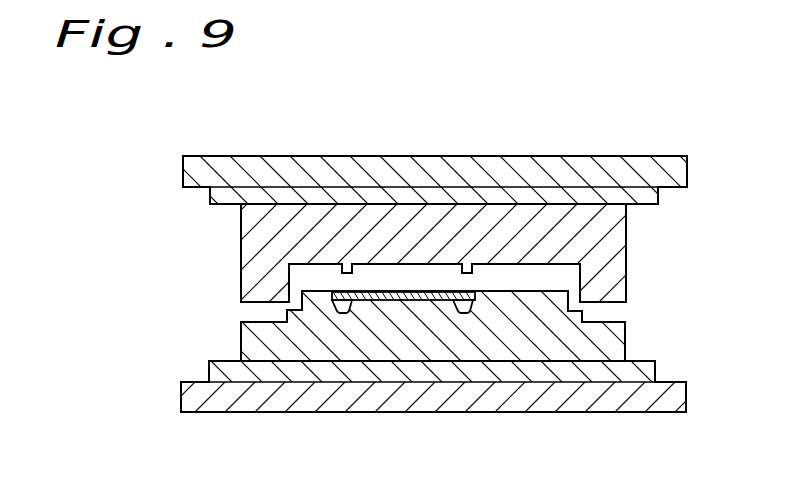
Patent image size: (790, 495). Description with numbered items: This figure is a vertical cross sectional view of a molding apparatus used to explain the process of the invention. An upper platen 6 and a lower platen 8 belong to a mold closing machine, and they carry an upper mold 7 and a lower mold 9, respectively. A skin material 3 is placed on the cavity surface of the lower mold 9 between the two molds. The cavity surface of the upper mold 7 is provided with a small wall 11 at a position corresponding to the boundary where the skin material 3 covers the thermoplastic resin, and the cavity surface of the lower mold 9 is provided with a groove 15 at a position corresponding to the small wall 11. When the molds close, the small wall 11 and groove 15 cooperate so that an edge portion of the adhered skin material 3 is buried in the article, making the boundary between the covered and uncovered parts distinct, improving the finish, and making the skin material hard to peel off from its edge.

The skin material 3 is at (410, 290).
The upper platen 6 is at (197, 169).
The upper mold 7 is at (257, 247).
The lower platen 8 is at (197, 392).
The lower mold 9 is at (255, 335).
The small wall 11 is at (347, 272).
The groove 15 is at (343, 303).